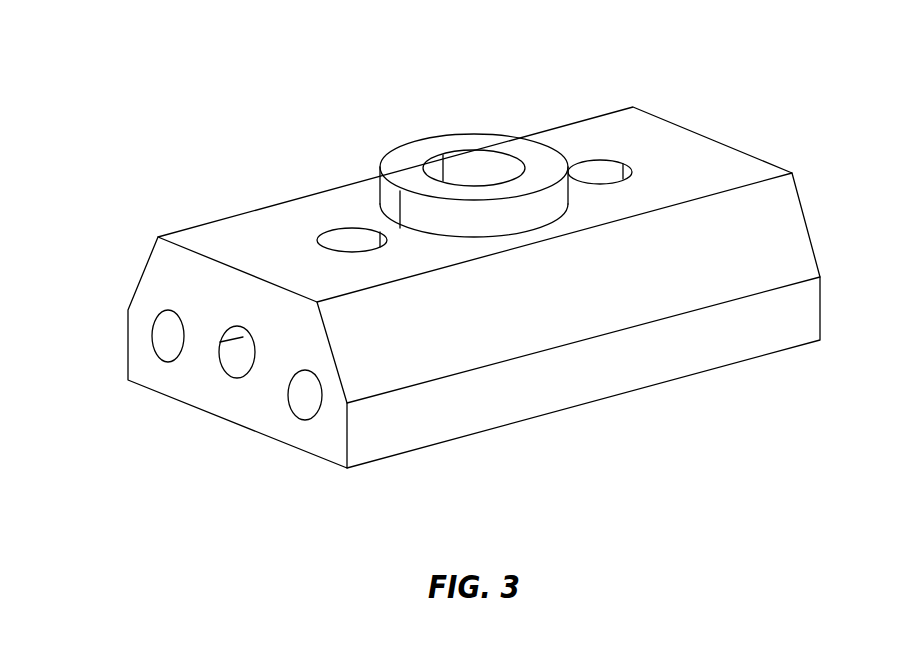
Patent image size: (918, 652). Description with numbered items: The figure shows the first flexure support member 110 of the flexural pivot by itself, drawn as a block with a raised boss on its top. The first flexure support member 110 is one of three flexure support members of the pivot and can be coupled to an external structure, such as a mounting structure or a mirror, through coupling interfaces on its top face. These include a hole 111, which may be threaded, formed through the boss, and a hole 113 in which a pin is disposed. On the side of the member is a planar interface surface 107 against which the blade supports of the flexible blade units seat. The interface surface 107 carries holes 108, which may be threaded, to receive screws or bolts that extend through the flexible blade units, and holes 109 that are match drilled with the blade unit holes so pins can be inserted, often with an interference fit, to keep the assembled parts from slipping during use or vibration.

The interface surface 107 is at (257, 415).
The hole 108 is at (220, 360).
The hole 109 is at (160, 338).
The first flexure support member 110 is at (412, 72).
The hole 111 is at (490, 150).
The hole 113 is at (335, 225).